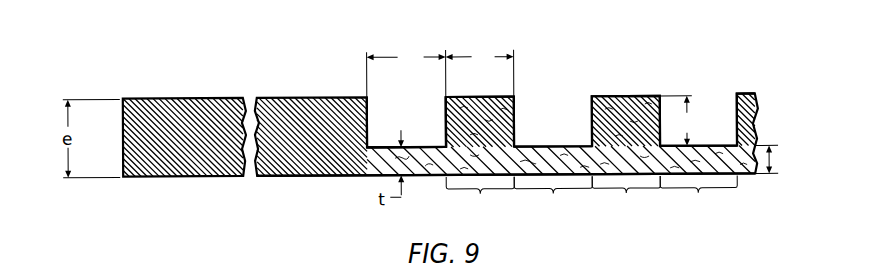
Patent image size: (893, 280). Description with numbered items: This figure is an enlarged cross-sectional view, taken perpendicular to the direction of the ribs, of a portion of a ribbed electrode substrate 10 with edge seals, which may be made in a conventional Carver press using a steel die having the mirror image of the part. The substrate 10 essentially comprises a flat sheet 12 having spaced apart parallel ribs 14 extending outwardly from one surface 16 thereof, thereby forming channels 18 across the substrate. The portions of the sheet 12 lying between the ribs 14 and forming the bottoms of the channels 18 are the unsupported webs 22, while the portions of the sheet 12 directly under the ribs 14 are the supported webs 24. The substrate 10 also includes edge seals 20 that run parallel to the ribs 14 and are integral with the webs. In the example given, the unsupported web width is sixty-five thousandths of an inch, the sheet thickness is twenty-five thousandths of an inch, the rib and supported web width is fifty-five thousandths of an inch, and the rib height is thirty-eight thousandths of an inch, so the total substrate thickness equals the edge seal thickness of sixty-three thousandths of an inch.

The substrate 10 is at (163, 85).
The flat sheet 12 is at (769, 177).
The ribs 14 is at (498, 97).
The surface 16 is at (711, 142).
The channels 18 is at (383, 118).
The edge seals 20 is at (213, 105).
The unsupported webs 22 is at (625, 197).
The supported webs 24 is at (553, 197).